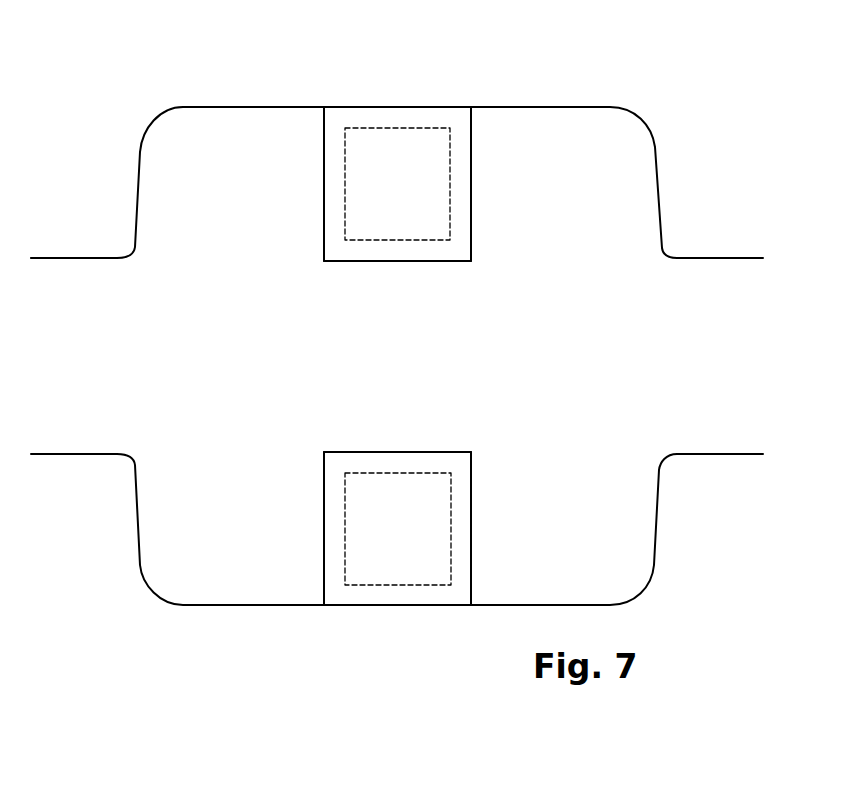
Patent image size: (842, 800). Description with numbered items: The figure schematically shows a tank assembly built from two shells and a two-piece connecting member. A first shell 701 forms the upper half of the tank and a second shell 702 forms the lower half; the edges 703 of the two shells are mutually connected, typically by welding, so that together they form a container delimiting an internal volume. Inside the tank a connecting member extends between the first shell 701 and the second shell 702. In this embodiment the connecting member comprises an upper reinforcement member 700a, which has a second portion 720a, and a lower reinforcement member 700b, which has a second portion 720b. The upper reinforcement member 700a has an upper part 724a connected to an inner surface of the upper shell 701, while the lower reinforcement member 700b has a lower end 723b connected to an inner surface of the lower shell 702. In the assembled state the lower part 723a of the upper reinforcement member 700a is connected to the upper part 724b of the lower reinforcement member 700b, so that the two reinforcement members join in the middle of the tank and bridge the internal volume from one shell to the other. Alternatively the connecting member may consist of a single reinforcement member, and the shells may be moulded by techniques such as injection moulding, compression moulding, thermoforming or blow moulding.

The first shell 701 is at (658, 170).
The second shell 702 is at (657, 535).
The edges 703 is at (86, 259).
The upper reinforcement member 700a is at (480, 159).
The lower reinforcement member 700b is at (482, 494).
The second portion 720a is at (451, 218).
The second portion 720b is at (451, 548).
The upper part 724a is at (417, 105).
The upper part 724b is at (356, 430).
The lower part 723a is at (350, 276).
The lower end 723b is at (371, 607).